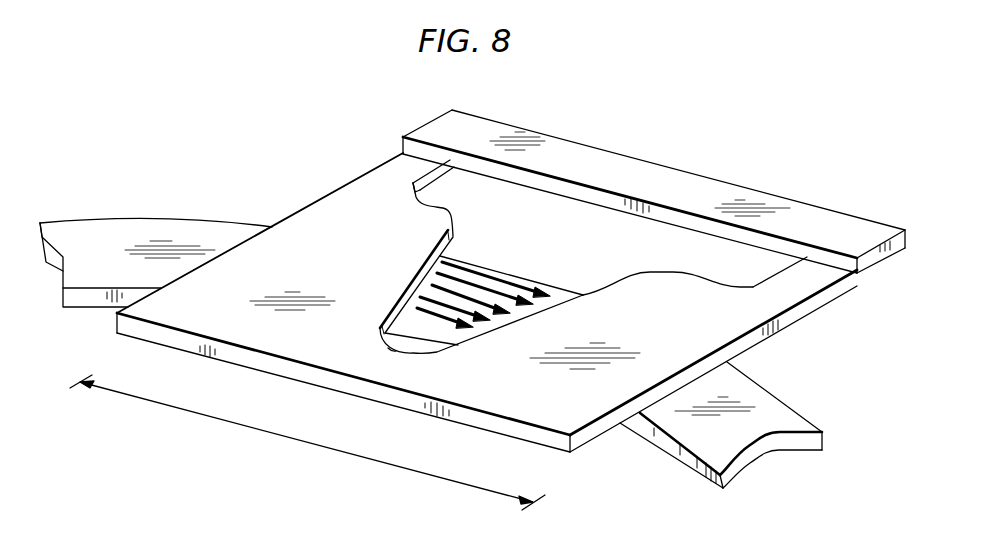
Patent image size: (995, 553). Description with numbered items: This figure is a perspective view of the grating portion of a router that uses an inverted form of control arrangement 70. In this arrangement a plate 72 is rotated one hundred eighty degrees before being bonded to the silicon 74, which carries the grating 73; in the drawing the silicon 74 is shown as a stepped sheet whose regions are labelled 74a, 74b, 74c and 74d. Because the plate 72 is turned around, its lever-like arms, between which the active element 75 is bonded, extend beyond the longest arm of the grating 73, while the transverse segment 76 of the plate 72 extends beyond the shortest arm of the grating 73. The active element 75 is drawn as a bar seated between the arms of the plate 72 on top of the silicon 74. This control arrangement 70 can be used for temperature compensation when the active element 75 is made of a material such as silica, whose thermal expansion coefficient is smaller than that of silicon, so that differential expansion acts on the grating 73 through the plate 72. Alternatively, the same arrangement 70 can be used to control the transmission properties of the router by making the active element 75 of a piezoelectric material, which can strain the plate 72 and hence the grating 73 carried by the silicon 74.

The control arrangement 70 is at (232, 402).
The plate 72 is at (165, 310).
The grating 73 is at (780, 413).
The silicon 74 is at (540, 412).
The plate left portion 74a is at (405, 168).
The plate right strip 74b is at (810, 278).
The bent tongue 74c is at (420, 278).
The slot opening 74d is at (597, 292).
The active element 75 is at (640, 170).
The transverse segment 76 is at (392, 352).